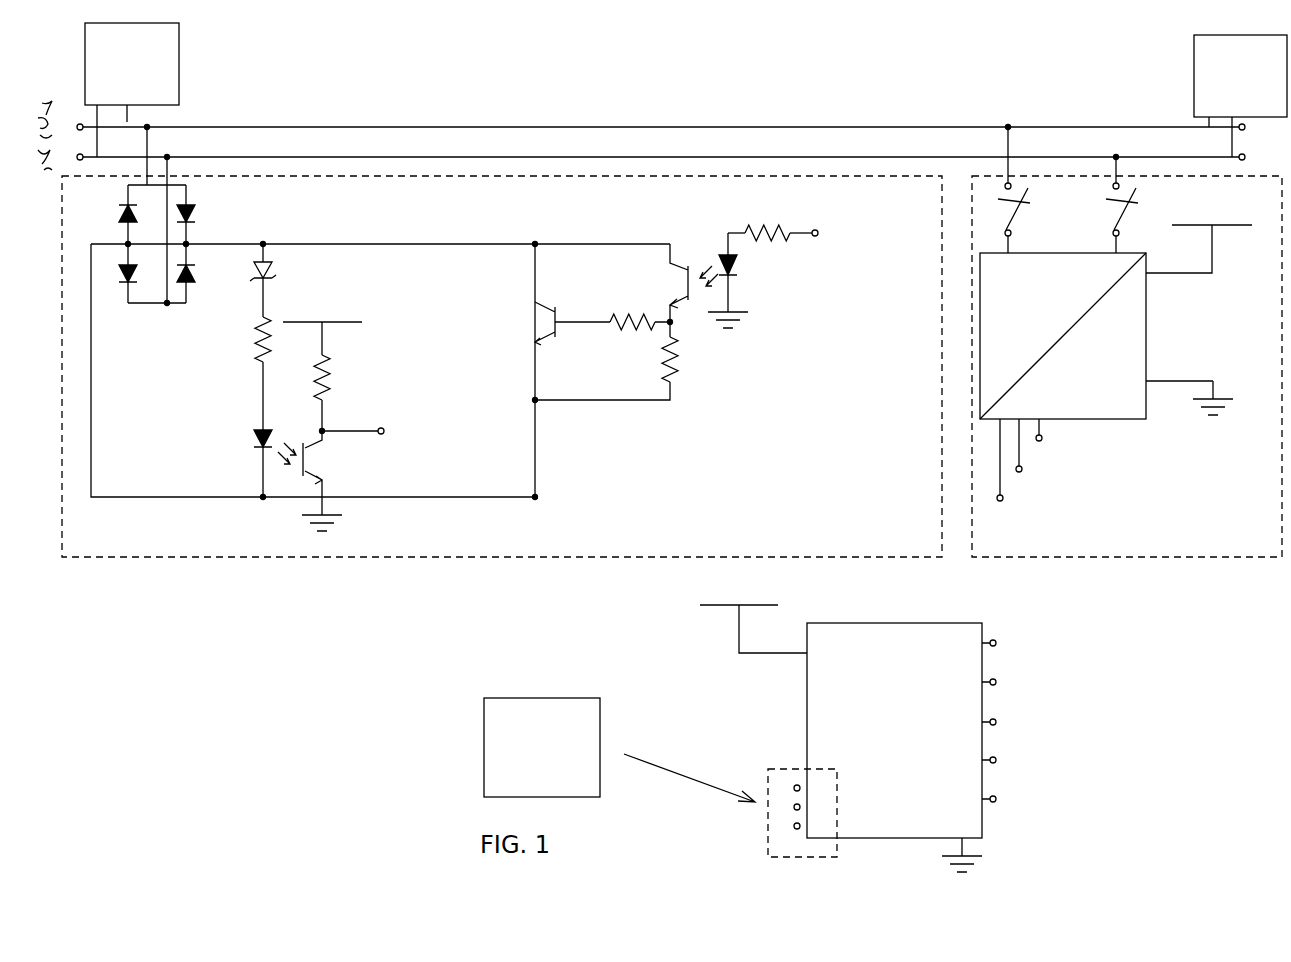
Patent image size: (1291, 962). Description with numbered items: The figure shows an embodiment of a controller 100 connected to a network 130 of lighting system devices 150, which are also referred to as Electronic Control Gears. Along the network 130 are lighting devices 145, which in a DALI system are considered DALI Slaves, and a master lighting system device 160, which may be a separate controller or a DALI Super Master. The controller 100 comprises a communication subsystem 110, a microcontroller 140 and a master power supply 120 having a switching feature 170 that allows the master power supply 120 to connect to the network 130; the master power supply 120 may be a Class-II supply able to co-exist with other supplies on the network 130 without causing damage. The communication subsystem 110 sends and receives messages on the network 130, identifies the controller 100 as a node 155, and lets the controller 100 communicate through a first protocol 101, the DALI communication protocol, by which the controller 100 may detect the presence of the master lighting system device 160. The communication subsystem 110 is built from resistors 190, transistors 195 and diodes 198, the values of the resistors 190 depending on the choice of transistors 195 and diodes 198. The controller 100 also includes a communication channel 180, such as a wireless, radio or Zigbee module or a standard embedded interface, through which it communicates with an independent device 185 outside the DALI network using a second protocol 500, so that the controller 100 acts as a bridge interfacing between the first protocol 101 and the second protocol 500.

The controller 100 is at (502, 386).
The first protocol 101 is at (661, 129).
The communication subsystem 110 is at (495, 328).
The master power supply 120 is at (1127, 356).
The network 130 is at (1185, 137).
The microcontroller 140 is at (937, 722).
The lighting devices 145 is at (132, 64).
The lighting system devices 150 is at (653, 92).
The node 155 is at (999, 142).
The master lighting system device 160 is at (1240, 76).
The switching feature 170 is at (1068, 204).
The communication channel 180 is at (802, 813).
The independent device 185 is at (542, 747).
The resistors 190 is at (237, 339).
The transistors 195 is at (517, 382).
The diodes 198 is at (180, 244).
The second protocol 500 is at (689, 769).